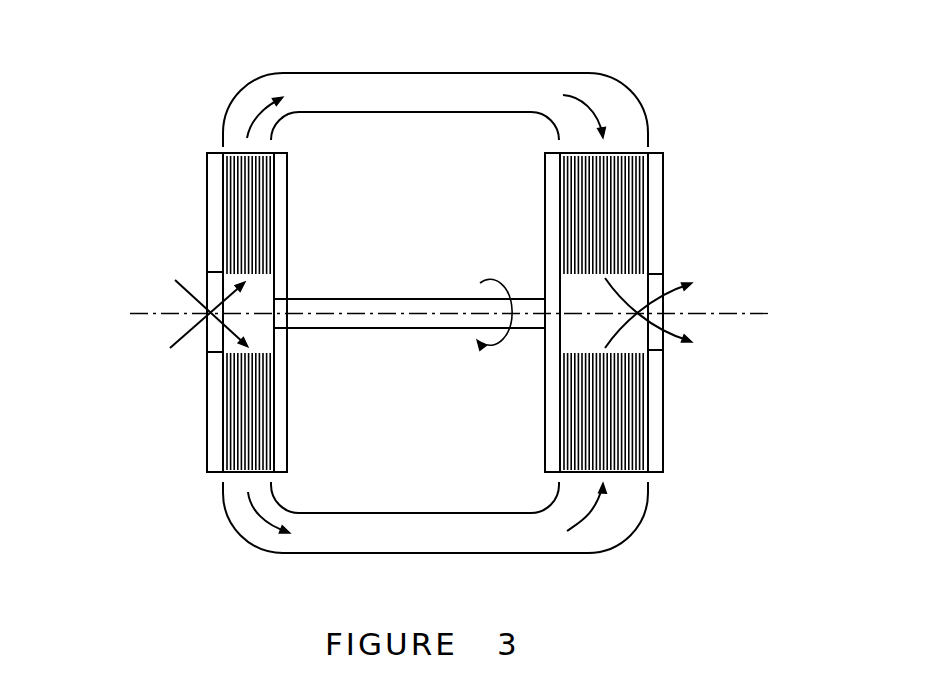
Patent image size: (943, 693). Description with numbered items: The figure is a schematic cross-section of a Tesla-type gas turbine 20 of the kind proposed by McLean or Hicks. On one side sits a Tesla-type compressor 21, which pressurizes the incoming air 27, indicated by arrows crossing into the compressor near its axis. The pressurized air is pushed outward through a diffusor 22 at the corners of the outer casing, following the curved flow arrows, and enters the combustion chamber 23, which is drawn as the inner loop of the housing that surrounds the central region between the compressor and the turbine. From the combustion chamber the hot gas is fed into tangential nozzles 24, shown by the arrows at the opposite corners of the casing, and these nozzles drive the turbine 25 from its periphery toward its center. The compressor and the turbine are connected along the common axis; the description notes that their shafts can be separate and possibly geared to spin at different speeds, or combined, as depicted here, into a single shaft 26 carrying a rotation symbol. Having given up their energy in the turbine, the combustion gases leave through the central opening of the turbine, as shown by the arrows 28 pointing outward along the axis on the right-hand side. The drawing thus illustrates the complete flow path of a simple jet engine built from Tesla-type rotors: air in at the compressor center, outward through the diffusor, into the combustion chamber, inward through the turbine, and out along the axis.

The gas turbine 20 is at (172, 84).
The Tesla-type compressor 21 is at (243, 237).
The diffusor 22 is at (253, 114).
The combustion chamber 23 is at (365, 97).
The tangential nozzles 24 is at (595, 109).
The turbine 25 is at (622, 401).
The single shaft 26 is at (399, 322).
The air 27 is at (185, 343).
The arrows 28 is at (650, 303).